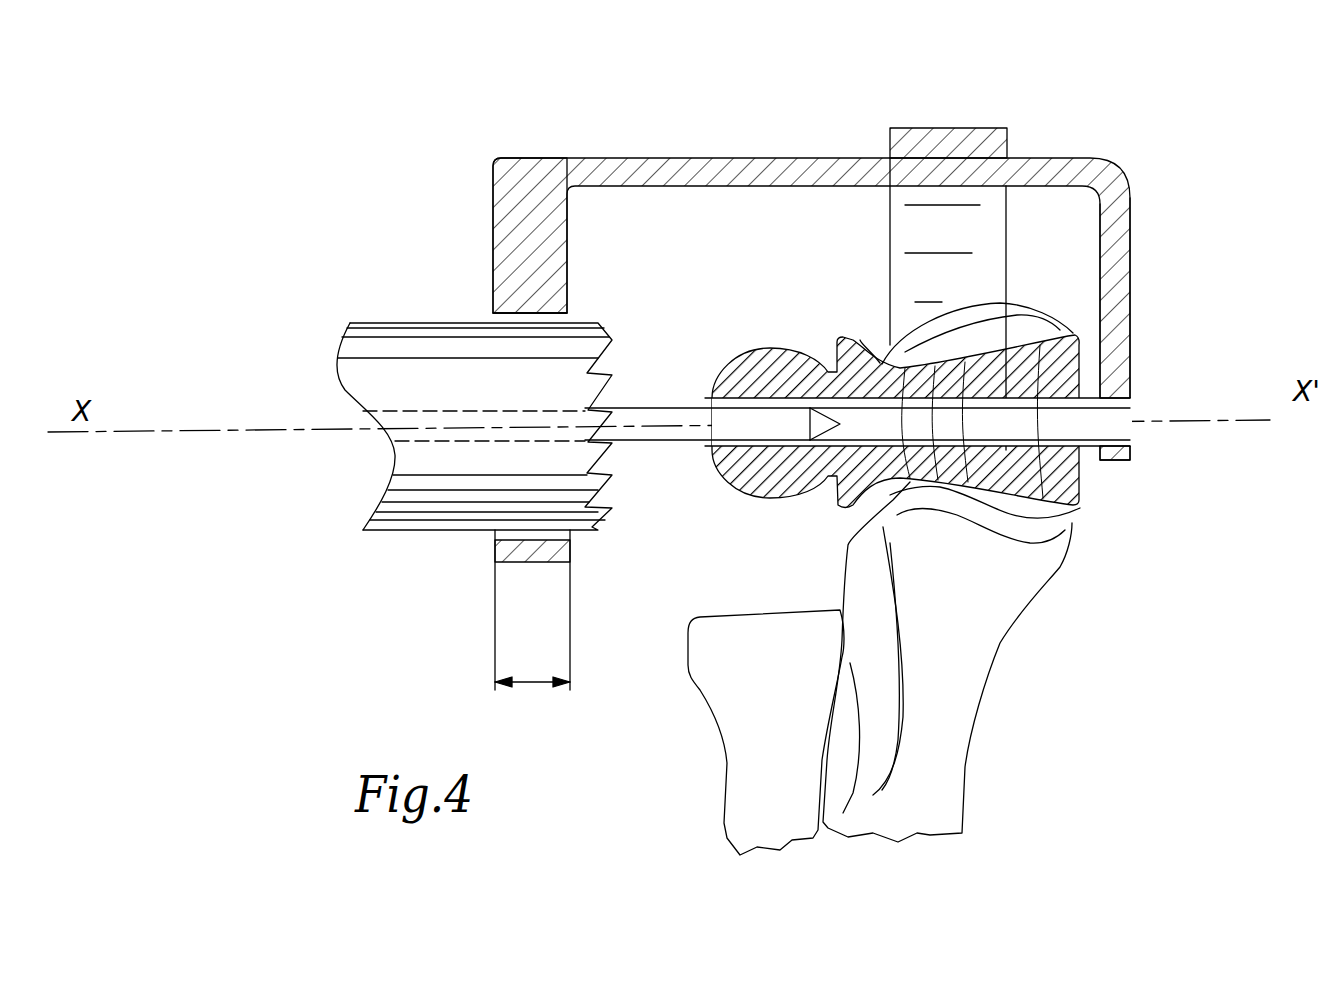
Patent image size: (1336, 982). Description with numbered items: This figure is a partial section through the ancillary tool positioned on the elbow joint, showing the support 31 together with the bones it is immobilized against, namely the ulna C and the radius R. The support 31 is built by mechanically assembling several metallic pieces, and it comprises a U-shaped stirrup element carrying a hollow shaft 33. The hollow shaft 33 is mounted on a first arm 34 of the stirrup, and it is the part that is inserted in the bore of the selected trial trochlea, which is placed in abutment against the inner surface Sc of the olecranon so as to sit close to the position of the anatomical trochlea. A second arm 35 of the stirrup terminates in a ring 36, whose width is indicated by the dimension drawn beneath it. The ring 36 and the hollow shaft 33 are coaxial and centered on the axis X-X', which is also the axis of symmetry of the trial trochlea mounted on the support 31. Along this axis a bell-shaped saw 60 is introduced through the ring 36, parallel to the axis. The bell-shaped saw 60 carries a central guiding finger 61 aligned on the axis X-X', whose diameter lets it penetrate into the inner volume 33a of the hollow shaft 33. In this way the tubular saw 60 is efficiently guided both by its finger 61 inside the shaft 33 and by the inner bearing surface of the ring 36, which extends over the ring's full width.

The support 31 is at (732, 175).
The hollow shaft 33 is at (1135, 441).
The inner volume of the shaft 33a is at (1104, 414).
The first arm 34 is at (1120, 246).
The second arm 35 is at (523, 251).
The ring 36 is at (505, 550).
The bell-shaped saw 60 is at (382, 348).
The central guiding finger 61 is at (660, 417).
The radius R is at (743, 775).
The ulna C is at (947, 730).
The inner surface of the olecranon Sc is at (1043, 513).